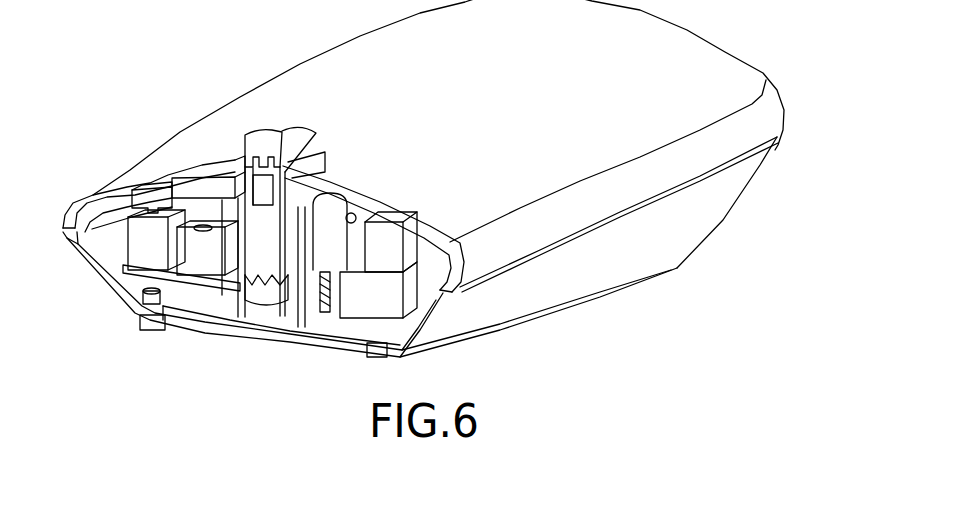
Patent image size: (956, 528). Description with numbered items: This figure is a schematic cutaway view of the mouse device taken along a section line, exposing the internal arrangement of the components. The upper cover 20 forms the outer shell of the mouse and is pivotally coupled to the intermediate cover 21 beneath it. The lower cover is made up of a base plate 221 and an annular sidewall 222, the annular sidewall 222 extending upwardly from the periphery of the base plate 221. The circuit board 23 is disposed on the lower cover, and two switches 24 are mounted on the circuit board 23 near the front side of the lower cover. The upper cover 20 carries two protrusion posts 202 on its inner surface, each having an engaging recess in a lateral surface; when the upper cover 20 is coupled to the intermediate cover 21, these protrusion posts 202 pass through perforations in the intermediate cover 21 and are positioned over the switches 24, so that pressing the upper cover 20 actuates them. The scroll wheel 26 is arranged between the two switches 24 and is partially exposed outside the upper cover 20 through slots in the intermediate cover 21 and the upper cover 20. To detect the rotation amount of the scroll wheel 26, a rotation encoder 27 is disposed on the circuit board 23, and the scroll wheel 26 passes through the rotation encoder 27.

The upper cover 20 is at (387, 42).
The intermediate cover 21 is at (216, 183).
The circuit board 23 is at (190, 290).
The switches 24 is at (143, 240).
The scroll wheel 26 is at (283, 137).
The rotation encoder 27 is at (332, 217).
The protrusion posts 202 is at (146, 195).
The base plate 221 is at (260, 330).
The annular sidewall 222 is at (567, 287).